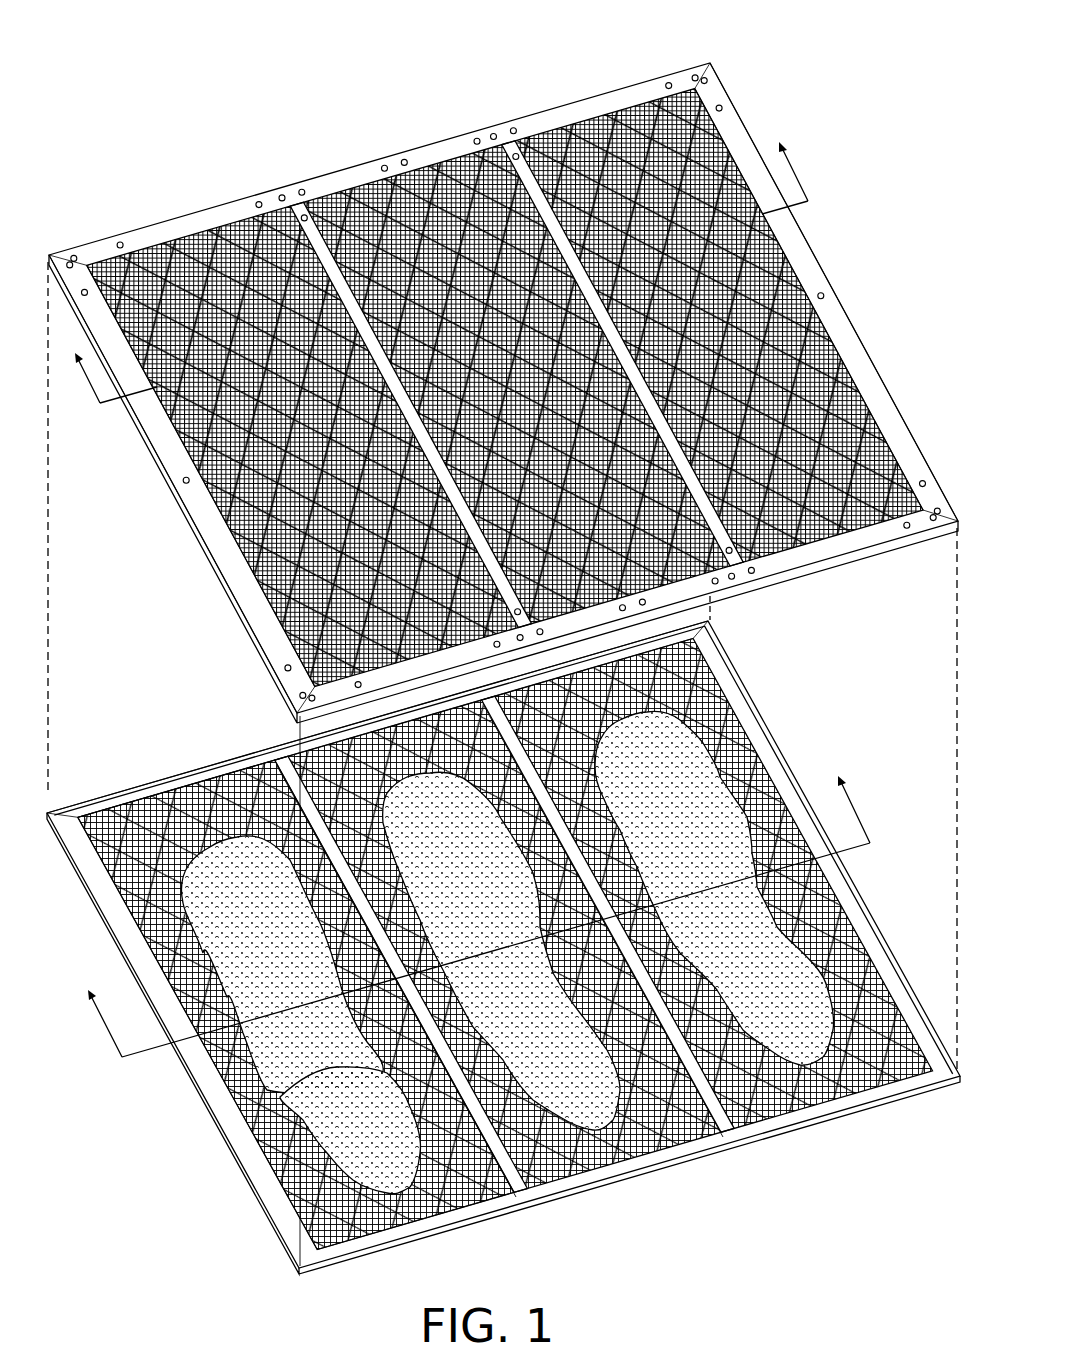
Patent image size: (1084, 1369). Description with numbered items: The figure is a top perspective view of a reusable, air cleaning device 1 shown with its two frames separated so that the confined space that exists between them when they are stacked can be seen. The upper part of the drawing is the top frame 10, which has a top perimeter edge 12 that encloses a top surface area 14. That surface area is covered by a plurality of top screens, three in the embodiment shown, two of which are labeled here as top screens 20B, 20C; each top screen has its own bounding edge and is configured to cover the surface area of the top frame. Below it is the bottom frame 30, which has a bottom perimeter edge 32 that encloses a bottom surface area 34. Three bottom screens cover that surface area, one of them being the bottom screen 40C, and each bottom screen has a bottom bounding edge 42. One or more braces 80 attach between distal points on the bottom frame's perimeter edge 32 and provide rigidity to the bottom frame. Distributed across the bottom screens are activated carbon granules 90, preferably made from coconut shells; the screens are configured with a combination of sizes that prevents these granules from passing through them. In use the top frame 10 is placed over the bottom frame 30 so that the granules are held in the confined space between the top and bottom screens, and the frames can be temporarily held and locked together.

The reusable, air cleaning device 1 is at (825, 67).
The top frame 10 is at (843, 333).
The top perimeter edge 12 is at (918, 445).
The top surface area 14 is at (178, 450).
The top screen 20B is at (215, 512).
The top screen 20C is at (212, 232).
The bottom frame 30 is at (793, 1113).
The bottom perimeter edge 32 is at (177, 790).
The bottom surface area 34 is at (343, 1198).
The bottom screen 40C is at (713, 667).
The bottom bounding edge 42 is at (320, 750).
The brace 80 is at (247, 1133).
The activated carbon granules 90 is at (788, 960).